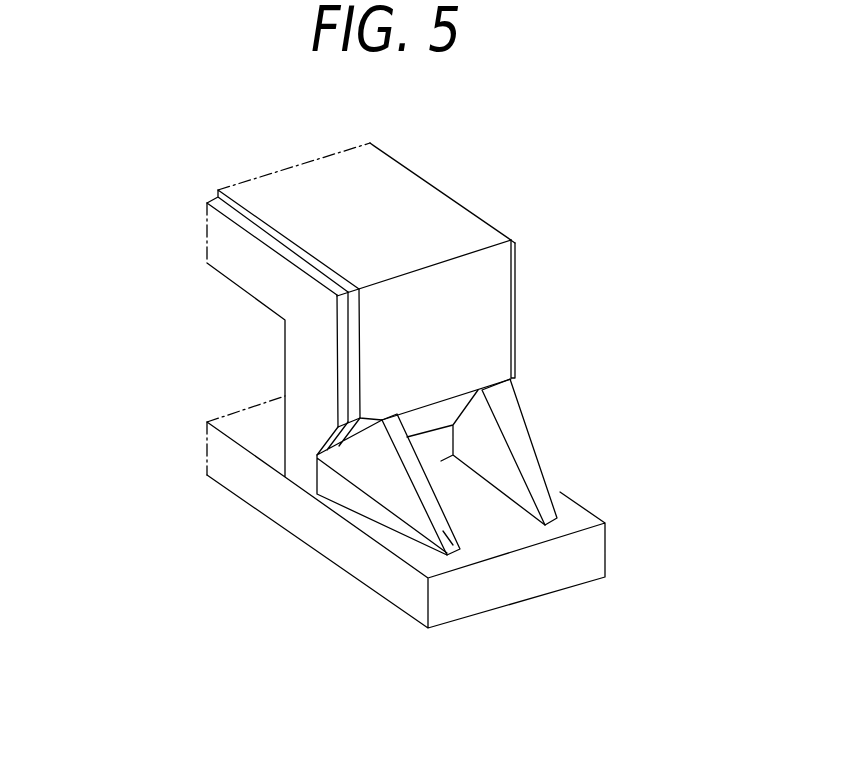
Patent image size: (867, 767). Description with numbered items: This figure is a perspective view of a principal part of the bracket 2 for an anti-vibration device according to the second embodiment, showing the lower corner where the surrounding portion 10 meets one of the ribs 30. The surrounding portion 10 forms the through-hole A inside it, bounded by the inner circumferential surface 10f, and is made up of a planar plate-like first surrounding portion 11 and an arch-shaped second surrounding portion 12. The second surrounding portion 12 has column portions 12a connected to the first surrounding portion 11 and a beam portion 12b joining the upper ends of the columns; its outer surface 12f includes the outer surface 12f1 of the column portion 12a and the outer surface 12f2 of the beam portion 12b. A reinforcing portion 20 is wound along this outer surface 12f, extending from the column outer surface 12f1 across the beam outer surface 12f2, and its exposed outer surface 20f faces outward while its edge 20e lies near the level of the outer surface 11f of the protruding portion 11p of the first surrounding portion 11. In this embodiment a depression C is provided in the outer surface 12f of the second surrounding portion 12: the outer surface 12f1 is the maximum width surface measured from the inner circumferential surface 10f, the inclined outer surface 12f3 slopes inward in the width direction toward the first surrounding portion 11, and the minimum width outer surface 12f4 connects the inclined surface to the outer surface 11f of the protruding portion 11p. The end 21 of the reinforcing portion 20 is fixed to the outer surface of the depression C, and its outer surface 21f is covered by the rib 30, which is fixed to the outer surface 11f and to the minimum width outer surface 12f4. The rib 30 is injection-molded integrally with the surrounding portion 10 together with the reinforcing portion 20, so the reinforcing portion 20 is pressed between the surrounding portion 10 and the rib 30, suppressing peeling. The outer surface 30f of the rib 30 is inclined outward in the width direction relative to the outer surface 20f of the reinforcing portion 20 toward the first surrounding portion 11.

The bracket for an anti-vibration device 2 is at (288, 148).
The surrounding portion 10 is at (376, 470).
The inner circumferential surface 10f is at (285, 362).
The first surrounding portion 11 is at (449, 571).
The outer surface of the protruding portion 11f is at (560, 518).
The protruding portion 11p is at (487, 585).
The second surrounding portion 12 is at (400, 395).
The column portion 12a is at (250, 297).
The beam portion 12b is at (237, 250).
The outer surface of the second surrounding portion 12f is at (497, 406).
The maximum width outer surface 12f1 is at (512, 292).
The outer surface of the beam portion 12f2 is at (478, 212).
The inclined outer surface 12f3 is at (345, 437).
The minimum width outer surface 12f4 is at (430, 445).
The reinforcing portion 20 is at (398, 259).
The edge of the reinforcing portion 20e is at (336, 480).
The outer surface of the reinforcing portion 20f is at (478, 280).
The end of the reinforcing portion 21 is at (475, 440).
The outer surface of the end 21f is at (430, 417).
The rib 30 is at (498, 526).
The outer surface of the rib 30f is at (503, 420).
The through-hole A is at (214, 330).
The depression C is at (520, 430).